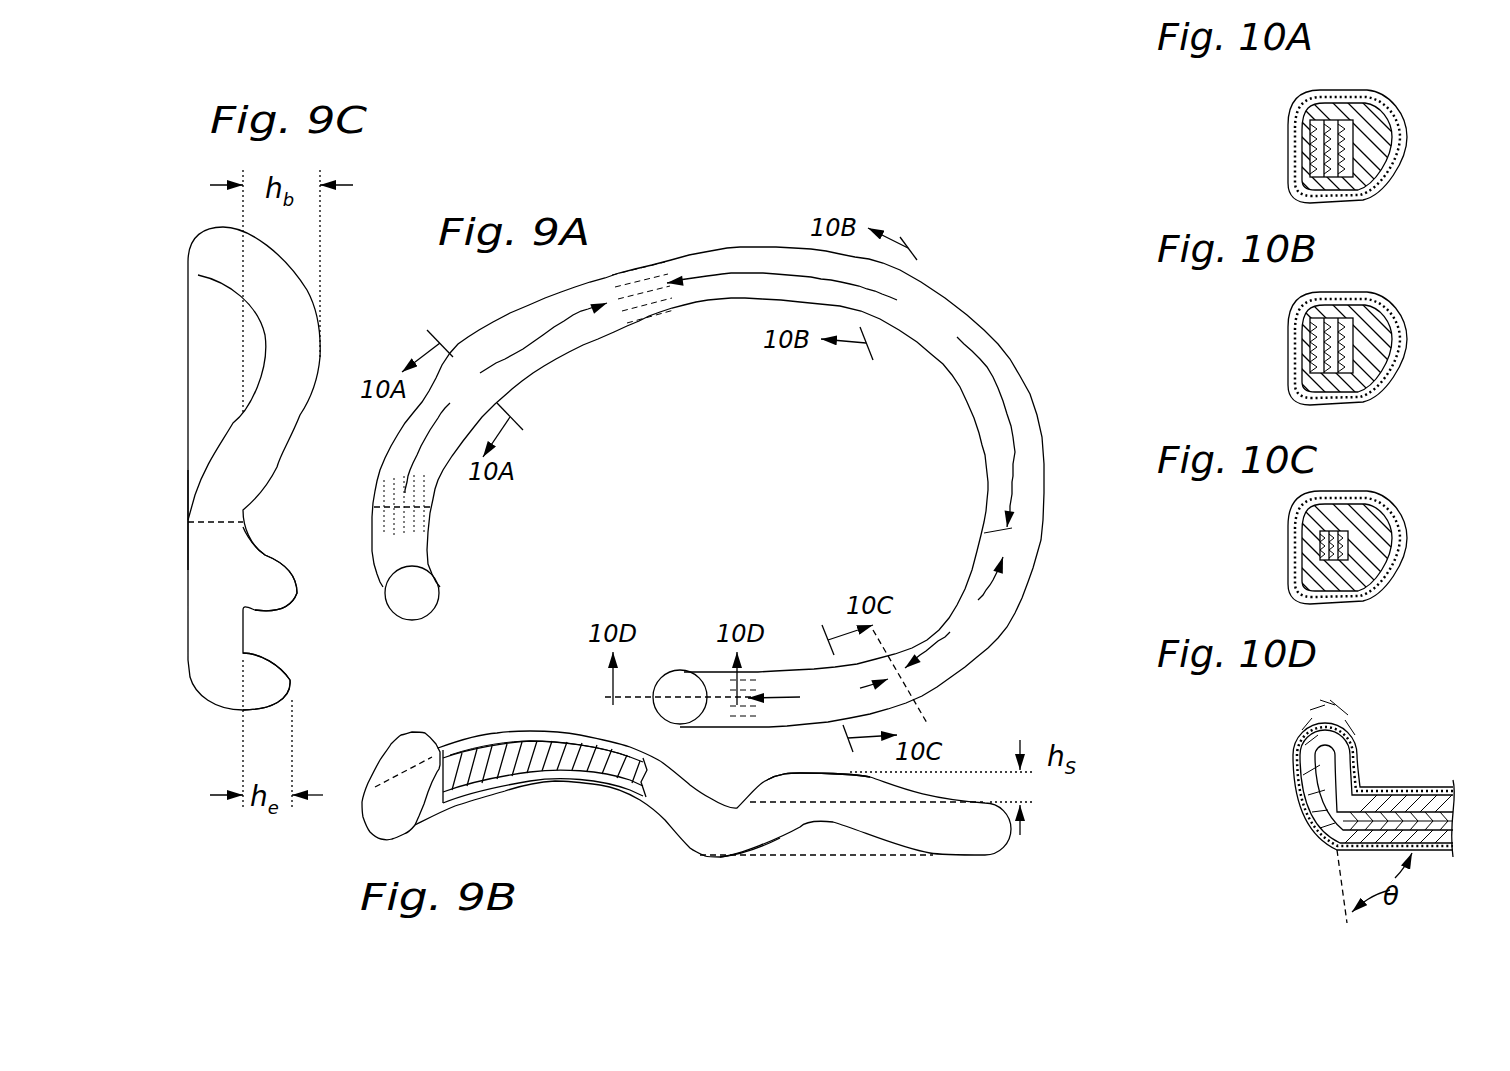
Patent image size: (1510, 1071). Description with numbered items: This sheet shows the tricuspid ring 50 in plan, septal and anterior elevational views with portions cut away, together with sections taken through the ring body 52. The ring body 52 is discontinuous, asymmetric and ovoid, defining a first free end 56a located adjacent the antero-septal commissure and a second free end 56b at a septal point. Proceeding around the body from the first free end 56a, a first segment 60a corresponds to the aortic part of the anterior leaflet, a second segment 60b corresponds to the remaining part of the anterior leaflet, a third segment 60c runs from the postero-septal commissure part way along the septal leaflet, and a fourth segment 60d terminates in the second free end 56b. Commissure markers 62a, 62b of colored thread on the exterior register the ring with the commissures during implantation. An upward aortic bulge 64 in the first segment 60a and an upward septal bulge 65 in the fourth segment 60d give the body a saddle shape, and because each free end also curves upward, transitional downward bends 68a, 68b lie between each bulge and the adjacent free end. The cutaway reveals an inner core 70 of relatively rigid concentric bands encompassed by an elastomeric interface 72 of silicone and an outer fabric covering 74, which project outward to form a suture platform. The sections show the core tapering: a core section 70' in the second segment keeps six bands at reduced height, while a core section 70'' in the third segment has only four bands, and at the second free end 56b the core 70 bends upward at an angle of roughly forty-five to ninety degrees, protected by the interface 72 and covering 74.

In FIG. 9A, the tricuspid ring 50 is at (700, 230).
In FIG. 9A, the ring body 52 is at (752, 243).
In FIG. 9A, the first free end 56a is at (440, 596).
In FIG. 9C, the first free end 56a is at (293, 603).
In FIG. 9A, the second free end 56b is at (680, 670).
In FIG. 9C, the second free end 56b is at (293, 687).
In FIG. 10D, the second free end 56b is at (1307, 720).
In FIG. 9A, the first segment 60a is at (507, 395).
In FIG. 9A, the second segment 60b is at (840, 400).
In FIG. 9A, the third segment 60c is at (955, 613).
In FIG. 9A, the fourth segment 60d is at (819, 691).
In FIG. 9A, the commissure marker 62a is at (430, 500).
In FIG. 9C, the commissure marker 62a is at (217, 523).
In FIG. 9A, the commissure marker 62b is at (1017, 540).
In FIG. 9B, the aortic bulge 64 is at (528, 790).
In FIG. 9C, the aortic bulge 64 is at (320, 357).
In FIG. 9B, the septal bulge 65 is at (797, 775).
In FIG. 9C, the transitional downward bend 68a is at (200, 515).
In FIG. 9B, the transitional downward bend 68b is at (720, 857).
In FIG. 9B, the inner core 70 is at (536, 728).
In FIG. 10A, the inner core 70 is at (1298, 126).
In FIG. 10D, the inner core 70 is at (1384, 777).
In FIG. 10B, the core section 70' is at (1291, 328).
In FIG. 10C, the core section 70'' is at (1292, 525).
In FIG. 9B, the elastomeric interface 72 is at (545, 745).
In FIG. 10A, the elastomeric interface 72 is at (1383, 107).
In FIG. 10D, the elastomeric interface 72 is at (1303, 777).
In FIG. 9B, the outer fabric covering 74 is at (560, 745).
In FIG. 10A, the outer fabric covering 74 is at (1407, 112).
In FIG. 10D, the outer fabric covering 74 is at (1310, 820).